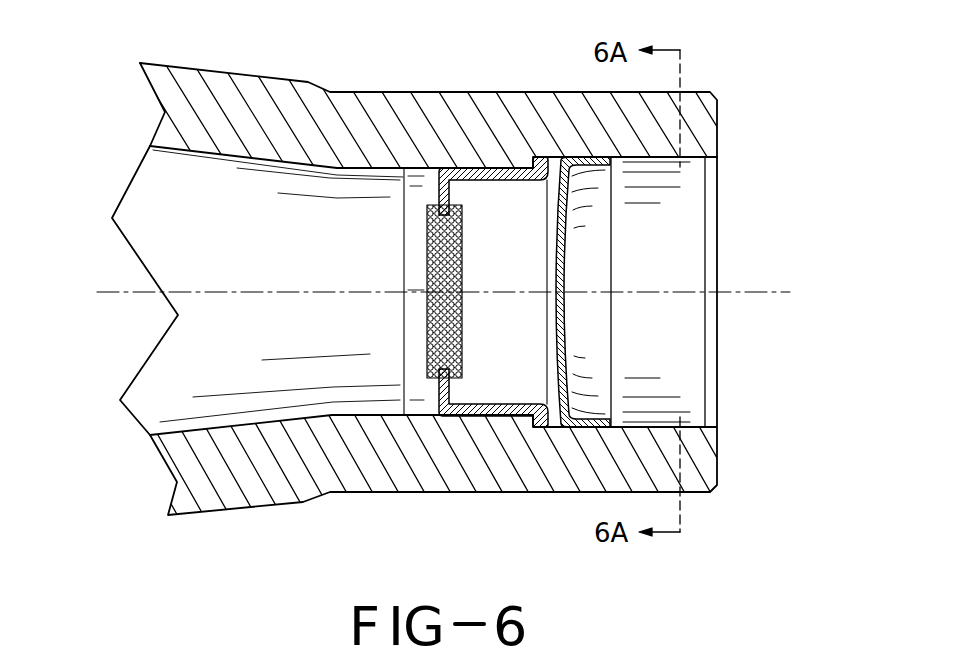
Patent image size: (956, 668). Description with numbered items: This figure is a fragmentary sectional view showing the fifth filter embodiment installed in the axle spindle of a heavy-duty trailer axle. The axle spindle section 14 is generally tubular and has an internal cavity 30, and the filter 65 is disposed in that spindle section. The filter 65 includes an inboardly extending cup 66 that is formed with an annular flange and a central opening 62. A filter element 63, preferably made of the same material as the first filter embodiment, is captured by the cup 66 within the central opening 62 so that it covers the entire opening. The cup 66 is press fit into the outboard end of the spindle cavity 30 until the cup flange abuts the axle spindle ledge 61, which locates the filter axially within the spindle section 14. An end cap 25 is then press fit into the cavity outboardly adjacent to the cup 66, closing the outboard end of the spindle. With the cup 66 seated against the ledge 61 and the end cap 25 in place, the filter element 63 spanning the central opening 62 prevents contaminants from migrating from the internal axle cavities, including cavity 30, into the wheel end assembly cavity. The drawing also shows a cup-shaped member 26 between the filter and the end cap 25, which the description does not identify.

The axle spindle section 14 is at (262, 97).
The internal cavity 30 is at (212, 155).
The filter 65 is at (434, 291).
The cup 66 is at (470, 168).
The central opening 62 is at (443, 367).
The filter element 63 is at (428, 254).
The axle spindle ledge 61 is at (532, 166).
The diaphragm 26 is at (562, 290).
The end cap 25 is at (592, 332).